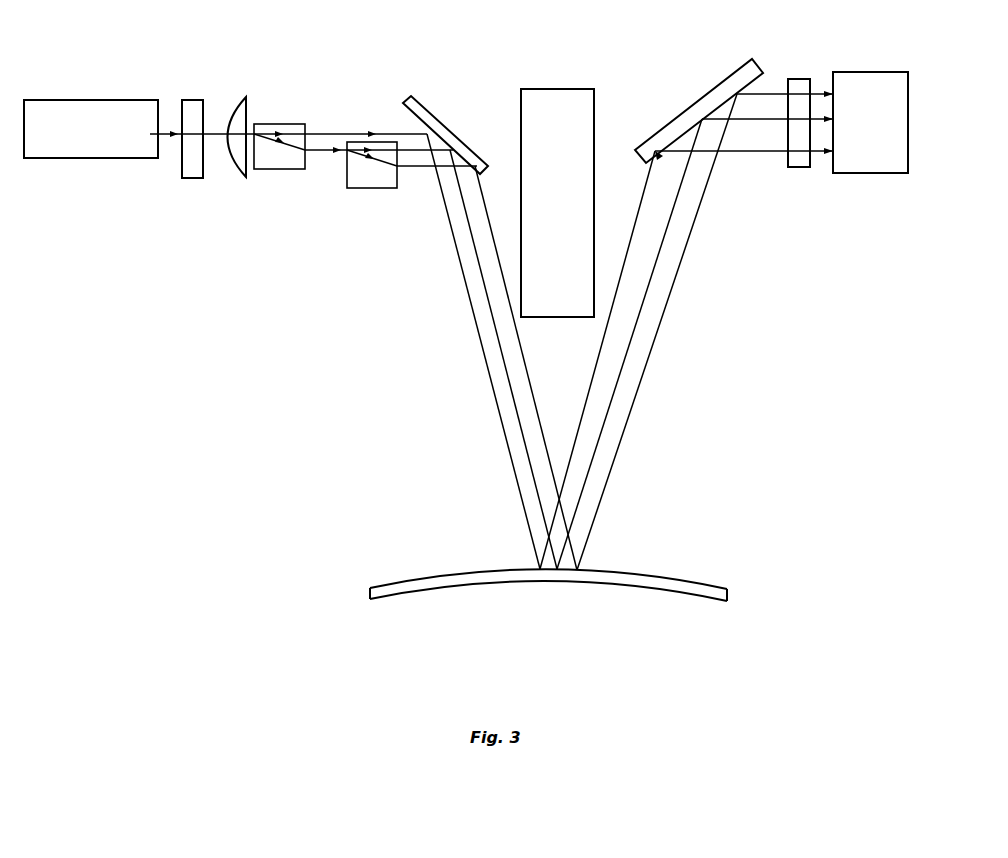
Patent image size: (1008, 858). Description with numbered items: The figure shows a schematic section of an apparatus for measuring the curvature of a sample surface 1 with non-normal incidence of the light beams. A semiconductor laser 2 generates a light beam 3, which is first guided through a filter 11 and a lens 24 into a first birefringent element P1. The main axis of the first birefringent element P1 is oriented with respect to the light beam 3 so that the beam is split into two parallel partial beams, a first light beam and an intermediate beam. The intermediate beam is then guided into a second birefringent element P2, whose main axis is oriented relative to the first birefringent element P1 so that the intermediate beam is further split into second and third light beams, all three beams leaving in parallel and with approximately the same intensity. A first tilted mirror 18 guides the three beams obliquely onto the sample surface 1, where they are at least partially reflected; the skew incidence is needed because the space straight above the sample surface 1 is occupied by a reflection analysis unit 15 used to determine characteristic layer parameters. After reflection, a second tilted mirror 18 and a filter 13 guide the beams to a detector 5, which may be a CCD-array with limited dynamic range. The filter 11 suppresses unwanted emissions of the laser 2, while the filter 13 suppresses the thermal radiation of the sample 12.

The semiconductor laser 2 is at (55, 113).
The filter 11 is at (193, 112).
The lens 24 is at (238, 93).
The light beam 3 is at (214, 140).
The first birefringent element P1 is at (287, 153).
The second birefringent element P2 is at (370, 173).
The tilted mirror 18 is at (443, 118).
The reflection analysis unit 15 is at (547, 113).
The filter 13 is at (799, 90).
The detector 5 is at (873, 103).
The sample surface 1 is at (416, 578).
The sample 12 is at (467, 582).